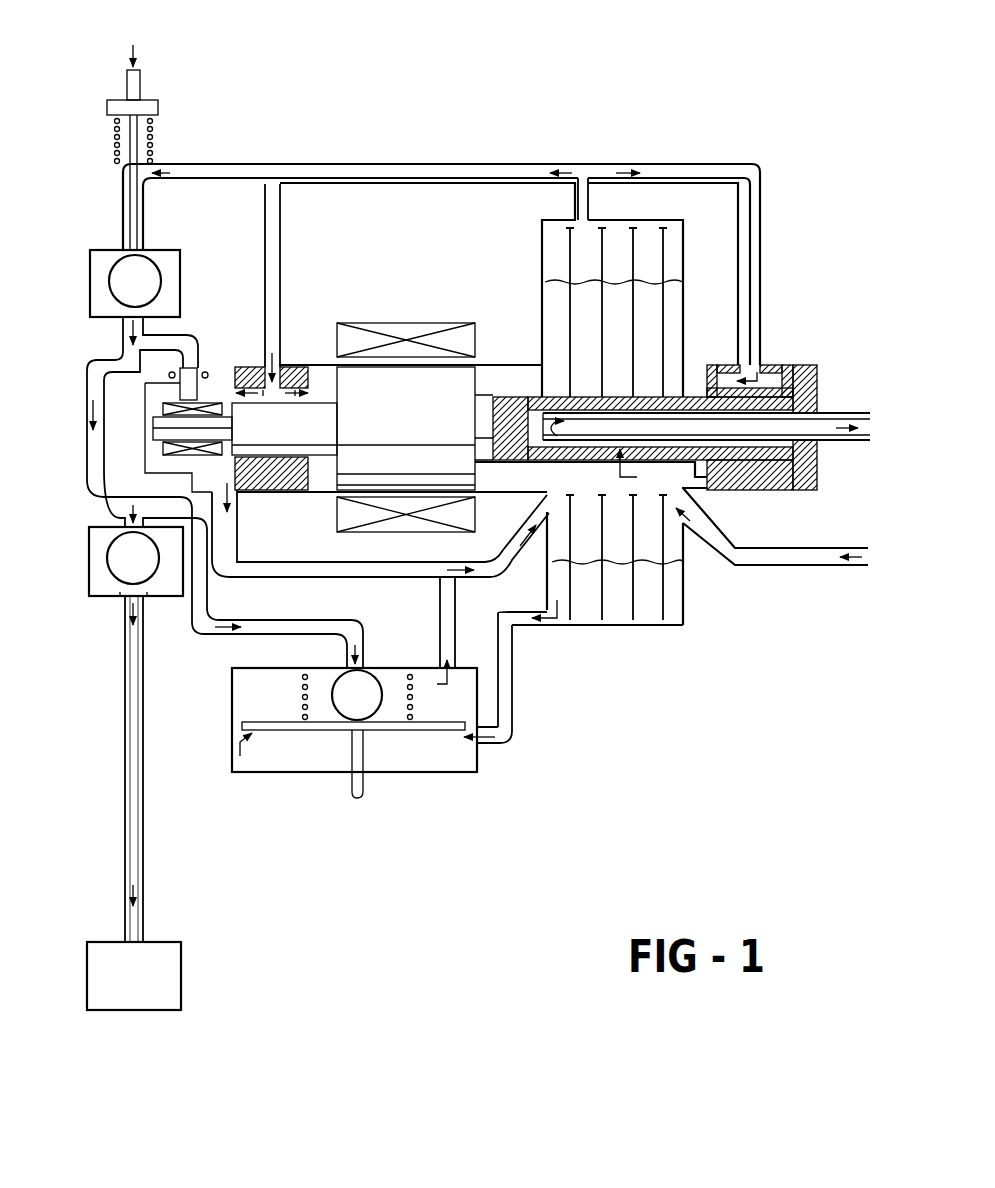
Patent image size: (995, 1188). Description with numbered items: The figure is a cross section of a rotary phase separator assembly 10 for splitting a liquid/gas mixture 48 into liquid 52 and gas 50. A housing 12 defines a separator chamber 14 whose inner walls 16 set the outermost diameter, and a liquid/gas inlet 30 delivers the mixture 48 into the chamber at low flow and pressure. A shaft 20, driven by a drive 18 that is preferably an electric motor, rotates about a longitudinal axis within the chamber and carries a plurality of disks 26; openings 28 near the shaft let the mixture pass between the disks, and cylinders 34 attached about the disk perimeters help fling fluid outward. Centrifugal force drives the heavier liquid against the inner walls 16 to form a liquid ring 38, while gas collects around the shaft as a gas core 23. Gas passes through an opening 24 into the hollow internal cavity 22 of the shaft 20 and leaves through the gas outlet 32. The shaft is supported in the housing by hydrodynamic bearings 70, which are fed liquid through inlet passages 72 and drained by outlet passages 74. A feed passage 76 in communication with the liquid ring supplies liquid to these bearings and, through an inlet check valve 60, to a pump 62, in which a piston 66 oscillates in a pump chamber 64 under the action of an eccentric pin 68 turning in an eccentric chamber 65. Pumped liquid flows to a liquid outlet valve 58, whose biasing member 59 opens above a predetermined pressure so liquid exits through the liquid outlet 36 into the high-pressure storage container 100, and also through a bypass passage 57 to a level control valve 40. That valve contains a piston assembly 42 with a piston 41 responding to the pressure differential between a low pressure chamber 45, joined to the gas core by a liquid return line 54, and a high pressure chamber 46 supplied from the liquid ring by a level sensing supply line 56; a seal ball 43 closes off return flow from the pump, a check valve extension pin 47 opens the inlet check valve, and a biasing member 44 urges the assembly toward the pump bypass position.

The rotary phase separator assembly 10 is at (360, 100).
The housing 12 is at (510, 362).
The separator chamber 14 is at (686, 222).
The inner walls 16 is at (612, 224).
The drive 18 is at (402, 322).
The shaft 20 is at (806, 365).
The hollow internal cavity 22 is at (797, 425).
The gas core 23 is at (588, 303).
The opening 24 is at (641, 466).
The disks 26 is at (626, 608).
The openings 28 is at (611, 484).
The liquid/gas inlet 30 is at (790, 566).
The gas outlet 32 is at (815, 442).
The cylinder 34 is at (633, 614).
The liquid outlet 36 is at (123, 857).
The liquid ring 38 is at (680, 276).
The level control valve 40 is at (452, 820).
The piston 41 is at (425, 735).
The piston assembly 42 is at (308, 740).
The seal ball 43 is at (373, 681).
The biasing member 44 is at (303, 692).
The low pressure chamber 45 is at (470, 692).
The high pressure chamber 46 is at (462, 760).
The check valve extension pin 47 is at (140, 86).
The liquid/gas mixture 48 is at (864, 557).
The gas 50 is at (835, 426).
The liquid 52 is at (150, 174).
The liquid return line 54 is at (515, 576).
The level sensing supply line 56 is at (519, 740).
The bypass passage 57 is at (191, 650).
The liquid outlet valve 58 is at (78, 574).
The biasing member 59 is at (125, 589).
The inlet check valve 60 is at (88, 256).
The pump 62 is at (243, 498).
The pump chamber 64 is at (190, 341).
The eccentric chamber 65 is at (182, 460).
The piston 66 is at (196, 386).
The eccentric pin 68 is at (152, 428).
The hydrodynamic bearings 70 is at (275, 366).
The inlet passages 72 is at (282, 262).
The outlet passages 74 is at (300, 404).
The feed passage 76 is at (472, 164).
The high-pressure storage container 100 is at (176, 996).